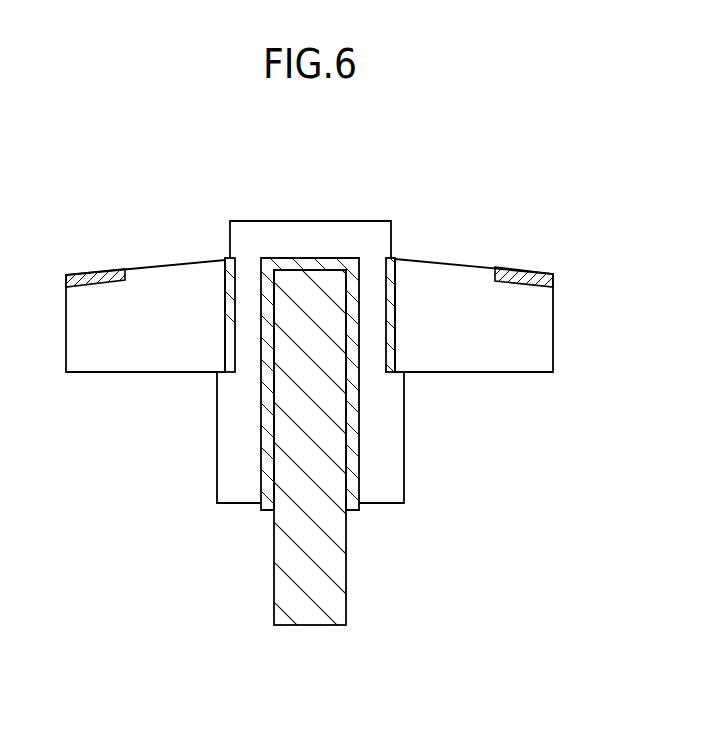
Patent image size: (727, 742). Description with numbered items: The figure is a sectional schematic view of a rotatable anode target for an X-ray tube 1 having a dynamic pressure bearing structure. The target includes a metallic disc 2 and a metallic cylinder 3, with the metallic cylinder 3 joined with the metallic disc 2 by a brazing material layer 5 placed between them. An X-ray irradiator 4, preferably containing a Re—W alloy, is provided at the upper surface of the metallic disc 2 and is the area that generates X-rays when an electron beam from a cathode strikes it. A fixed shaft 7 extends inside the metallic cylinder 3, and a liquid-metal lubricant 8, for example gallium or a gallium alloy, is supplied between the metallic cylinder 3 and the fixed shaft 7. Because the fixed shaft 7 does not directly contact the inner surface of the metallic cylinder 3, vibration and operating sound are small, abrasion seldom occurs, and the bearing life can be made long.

The rotatable anode target for an X-ray tube 1 is at (90, 177).
The metallic disc 2 is at (545, 323).
The metallic cylinder 3 is at (311, 233).
The X-ray irradiator 4 is at (527, 273).
The brazing material layer 5 is at (393, 261).
The fixed shaft 7 is at (318, 575).
The liquid-metal lubricant 8 is at (352, 503).